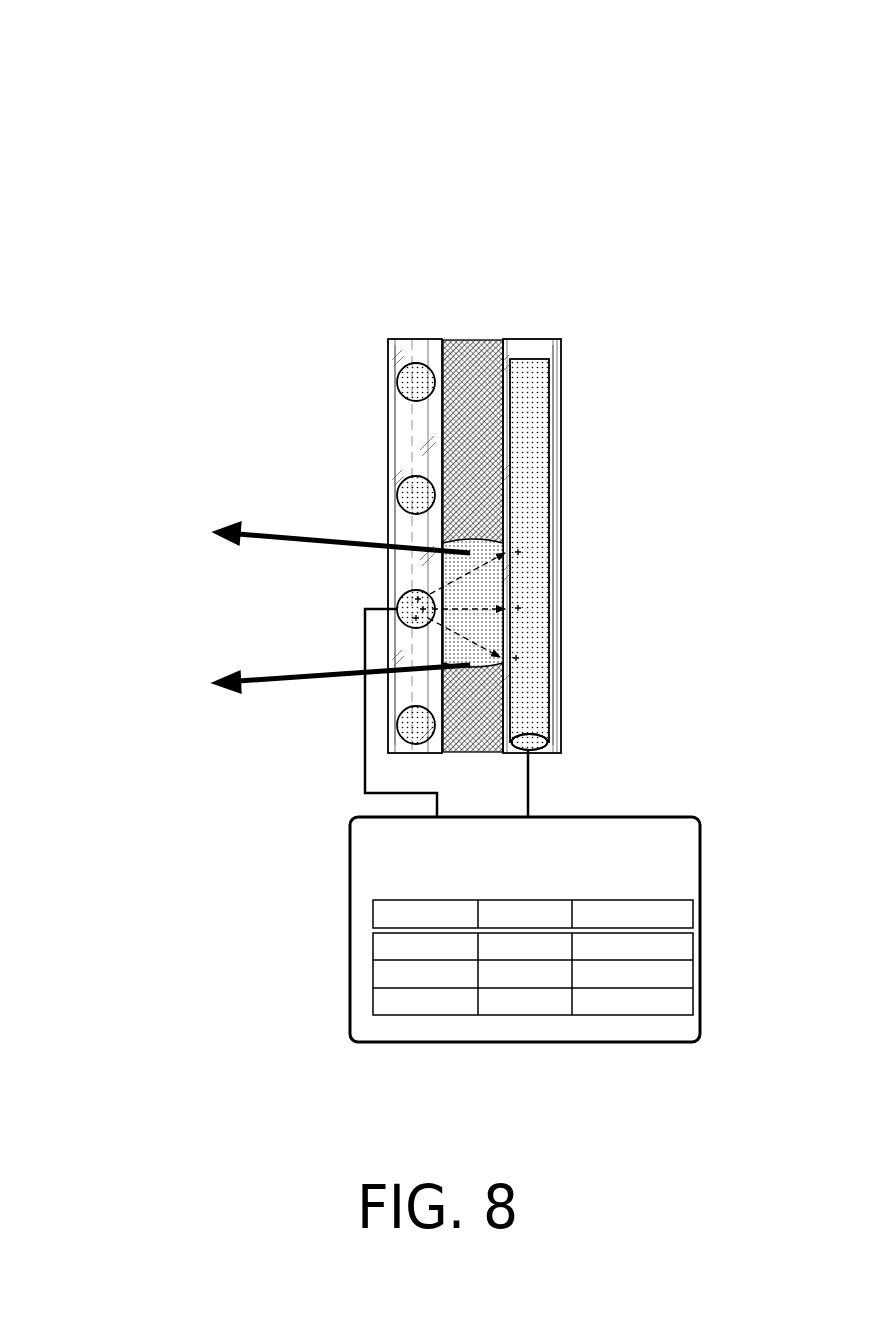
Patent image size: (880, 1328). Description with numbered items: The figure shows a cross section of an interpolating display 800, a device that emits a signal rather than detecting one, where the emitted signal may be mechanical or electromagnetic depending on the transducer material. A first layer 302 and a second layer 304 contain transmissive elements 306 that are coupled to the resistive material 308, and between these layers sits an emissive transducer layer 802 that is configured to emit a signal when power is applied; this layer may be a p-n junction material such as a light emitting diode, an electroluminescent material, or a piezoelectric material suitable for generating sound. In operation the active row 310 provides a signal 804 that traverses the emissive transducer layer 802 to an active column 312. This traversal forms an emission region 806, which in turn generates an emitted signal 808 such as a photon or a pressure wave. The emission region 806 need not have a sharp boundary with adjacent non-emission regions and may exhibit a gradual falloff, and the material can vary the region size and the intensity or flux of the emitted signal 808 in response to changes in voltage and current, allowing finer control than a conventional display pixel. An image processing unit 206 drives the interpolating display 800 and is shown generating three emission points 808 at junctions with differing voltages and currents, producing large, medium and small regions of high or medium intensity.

The interpolating display 800 is at (693, 92).
The first layer 302 is at (386, 325).
The second layer 304 is at (500, 325).
The transmissive elements 306 is at (412, 378).
The resistive material 308 is at (406, 434).
The active row 310 is at (395, 607).
The active column 312 is at (528, 430).
The emissive transducer layer 802 is at (470, 365).
The signal 804 is at (536, 599).
The emission region 806 is at (477, 552).
The emitted signal 808 is at (340, 1018).
The image processing unit 206 is at (525, 929).